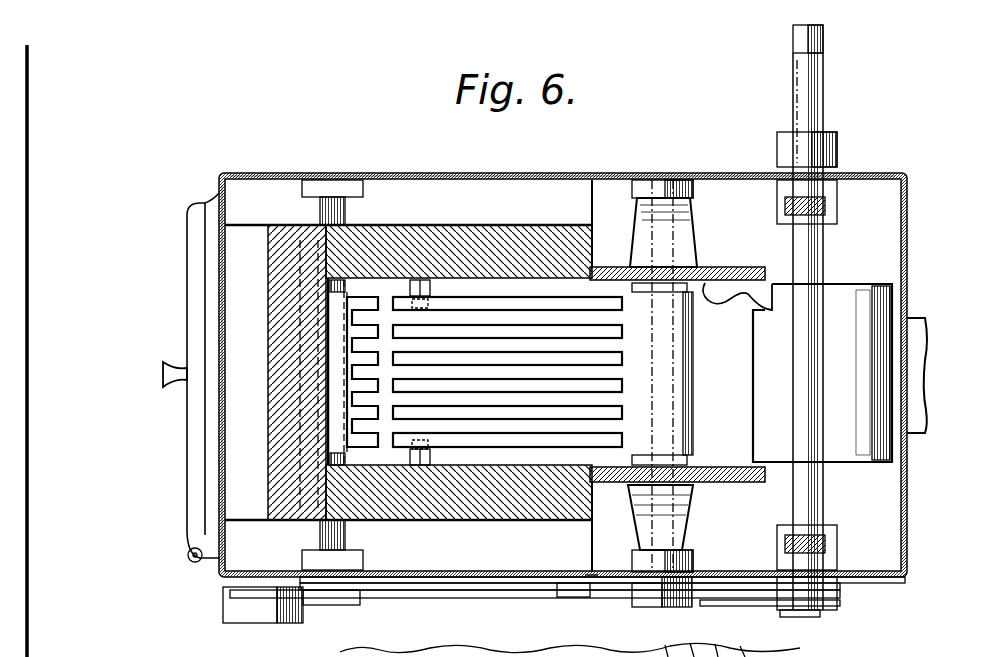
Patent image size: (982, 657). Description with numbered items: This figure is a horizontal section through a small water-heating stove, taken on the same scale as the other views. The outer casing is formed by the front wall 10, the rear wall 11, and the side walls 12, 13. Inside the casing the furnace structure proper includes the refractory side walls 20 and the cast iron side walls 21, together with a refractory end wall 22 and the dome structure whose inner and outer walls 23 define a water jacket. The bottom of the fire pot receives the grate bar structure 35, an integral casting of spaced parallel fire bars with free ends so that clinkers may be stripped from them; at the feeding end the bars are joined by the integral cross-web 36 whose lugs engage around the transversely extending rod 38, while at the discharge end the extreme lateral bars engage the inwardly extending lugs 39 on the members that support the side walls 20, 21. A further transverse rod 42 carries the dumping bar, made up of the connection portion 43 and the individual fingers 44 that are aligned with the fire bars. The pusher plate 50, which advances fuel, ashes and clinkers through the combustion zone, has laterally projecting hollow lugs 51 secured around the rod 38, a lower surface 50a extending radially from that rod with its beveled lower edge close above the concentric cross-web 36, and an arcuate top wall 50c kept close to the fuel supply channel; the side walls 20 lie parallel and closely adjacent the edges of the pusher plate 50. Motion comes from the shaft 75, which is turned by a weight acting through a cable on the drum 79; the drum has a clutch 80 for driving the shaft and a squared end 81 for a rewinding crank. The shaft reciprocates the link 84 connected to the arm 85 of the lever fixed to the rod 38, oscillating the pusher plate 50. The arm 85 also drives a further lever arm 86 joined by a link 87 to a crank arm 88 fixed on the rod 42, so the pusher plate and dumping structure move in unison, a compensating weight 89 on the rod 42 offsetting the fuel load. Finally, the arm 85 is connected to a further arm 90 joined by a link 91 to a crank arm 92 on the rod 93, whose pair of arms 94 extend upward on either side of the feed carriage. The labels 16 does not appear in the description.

The front wall 10 is at (219, 292).
The rear wall 11 is at (905, 492).
The side wall 12 is at (445, 578).
The side wall 13 is at (392, 175).
The handle 16 is at (187, 421).
The refractory side walls 20 is at (475, 240).
The cast iron side walls 21 is at (738, 278).
The refractory end wall 22 is at (268, 366).
The inner and outer walls 23 is at (385, 655).
The grate bar structure 35 is at (520, 305).
The cross-web 36 is at (658, 373).
The transversely extending rod 38 is at (730, 523).
The lugs 39 is at (420, 280).
The transverse rod 42 is at (320, 207).
The connection portion 43 is at (330, 394).
The fingers 44 is at (378, 410).
The pusher plate 50 is at (800, 373).
The lower surface 50a is at (724, 331).
The arcuate top wall 50c is at (855, 300).
The hollow lugs 51 is at (690, 282).
The shaft 75 is at (825, 94).
The drum 79 is at (800, 76).
The clutch 80 is at (810, 157).
The squared end 81 is at (823, 37).
The link 84 is at (755, 606).
The arm 85 is at (748, 583).
The lever arm 86 is at (540, 597).
The link 87 is at (393, 585).
The crank arm 88 is at (310, 606).
The compensating weight 89 is at (228, 604).
The arm 90 is at (615, 598).
The link 91 is at (588, 572).
The crank arm 92 is at (678, 607).
The rod 93 is at (825, 234).
The arms 94 is at (840, 187).